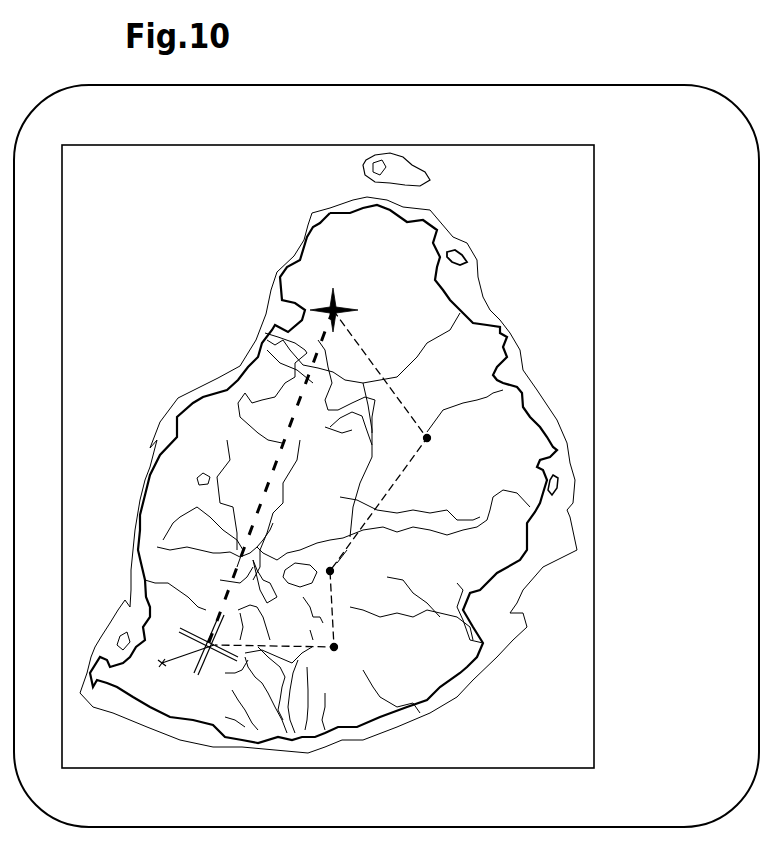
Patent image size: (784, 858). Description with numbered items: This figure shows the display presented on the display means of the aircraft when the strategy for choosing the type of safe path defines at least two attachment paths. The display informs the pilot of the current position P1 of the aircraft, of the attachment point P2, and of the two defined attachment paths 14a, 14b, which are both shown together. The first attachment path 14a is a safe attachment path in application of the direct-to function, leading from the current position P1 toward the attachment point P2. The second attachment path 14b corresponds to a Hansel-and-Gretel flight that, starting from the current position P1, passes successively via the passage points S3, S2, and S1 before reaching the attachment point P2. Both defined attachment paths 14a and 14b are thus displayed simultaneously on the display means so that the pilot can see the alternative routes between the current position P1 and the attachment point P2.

The first attachment path 14a is at (300, 455).
The second attachment path 14b is at (340, 628).
The current position P1 is at (208, 648).
The attachment point P2 is at (327, 305).
The passage point S1 is at (447, 441).
The passage point S2 is at (351, 586).
The passage point S3 is at (336, 666).